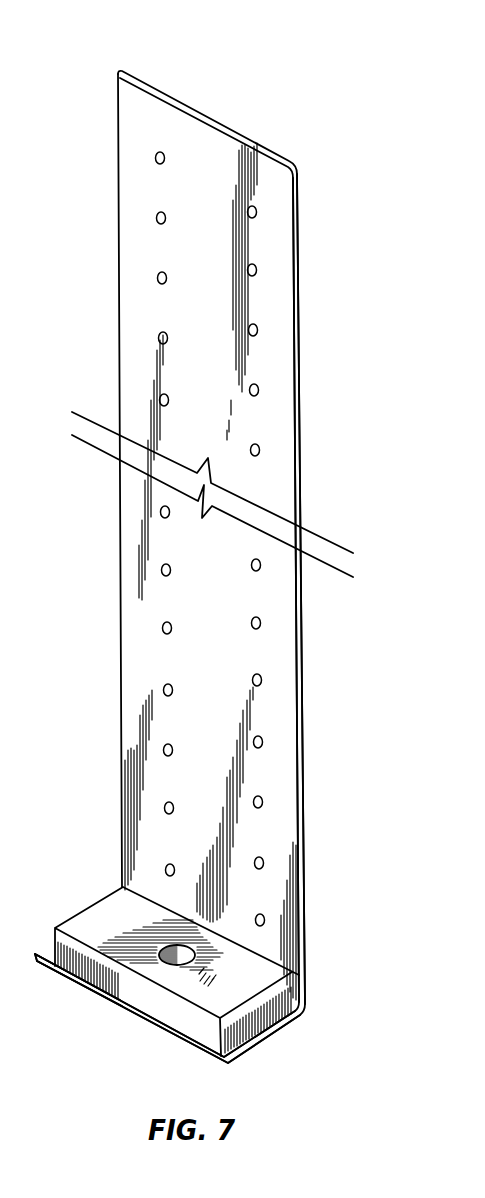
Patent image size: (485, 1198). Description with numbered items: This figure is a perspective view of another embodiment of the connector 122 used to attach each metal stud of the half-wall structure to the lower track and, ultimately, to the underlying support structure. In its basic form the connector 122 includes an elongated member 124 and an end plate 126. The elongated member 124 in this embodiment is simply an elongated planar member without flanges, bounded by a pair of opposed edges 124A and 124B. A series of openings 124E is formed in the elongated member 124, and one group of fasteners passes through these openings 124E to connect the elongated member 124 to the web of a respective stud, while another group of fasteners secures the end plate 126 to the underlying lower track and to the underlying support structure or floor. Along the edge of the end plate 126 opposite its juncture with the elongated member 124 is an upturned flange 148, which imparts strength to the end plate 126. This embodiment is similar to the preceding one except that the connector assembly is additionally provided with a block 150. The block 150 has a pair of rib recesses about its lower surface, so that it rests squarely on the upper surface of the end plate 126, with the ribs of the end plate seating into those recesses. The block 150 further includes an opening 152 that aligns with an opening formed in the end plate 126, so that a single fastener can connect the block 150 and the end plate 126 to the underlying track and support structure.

The connector 122 is at (246, 88).
The elongated member 124 is at (268, 355).
The opposed edge 124A is at (120, 232).
The opposed edge 124B is at (300, 299).
The openings 124E is at (158, 278).
The end plate 126 is at (252, 1048).
The upturned flange 148 is at (83, 985).
The block 150 is at (243, 973).
The opening 152 is at (165, 962).